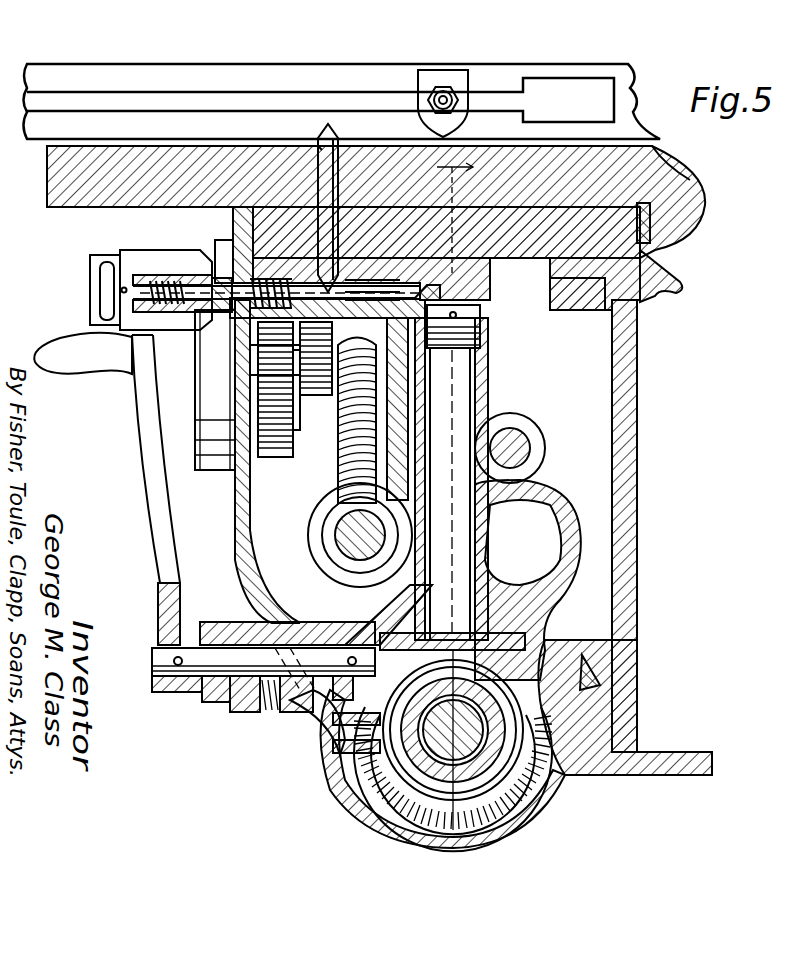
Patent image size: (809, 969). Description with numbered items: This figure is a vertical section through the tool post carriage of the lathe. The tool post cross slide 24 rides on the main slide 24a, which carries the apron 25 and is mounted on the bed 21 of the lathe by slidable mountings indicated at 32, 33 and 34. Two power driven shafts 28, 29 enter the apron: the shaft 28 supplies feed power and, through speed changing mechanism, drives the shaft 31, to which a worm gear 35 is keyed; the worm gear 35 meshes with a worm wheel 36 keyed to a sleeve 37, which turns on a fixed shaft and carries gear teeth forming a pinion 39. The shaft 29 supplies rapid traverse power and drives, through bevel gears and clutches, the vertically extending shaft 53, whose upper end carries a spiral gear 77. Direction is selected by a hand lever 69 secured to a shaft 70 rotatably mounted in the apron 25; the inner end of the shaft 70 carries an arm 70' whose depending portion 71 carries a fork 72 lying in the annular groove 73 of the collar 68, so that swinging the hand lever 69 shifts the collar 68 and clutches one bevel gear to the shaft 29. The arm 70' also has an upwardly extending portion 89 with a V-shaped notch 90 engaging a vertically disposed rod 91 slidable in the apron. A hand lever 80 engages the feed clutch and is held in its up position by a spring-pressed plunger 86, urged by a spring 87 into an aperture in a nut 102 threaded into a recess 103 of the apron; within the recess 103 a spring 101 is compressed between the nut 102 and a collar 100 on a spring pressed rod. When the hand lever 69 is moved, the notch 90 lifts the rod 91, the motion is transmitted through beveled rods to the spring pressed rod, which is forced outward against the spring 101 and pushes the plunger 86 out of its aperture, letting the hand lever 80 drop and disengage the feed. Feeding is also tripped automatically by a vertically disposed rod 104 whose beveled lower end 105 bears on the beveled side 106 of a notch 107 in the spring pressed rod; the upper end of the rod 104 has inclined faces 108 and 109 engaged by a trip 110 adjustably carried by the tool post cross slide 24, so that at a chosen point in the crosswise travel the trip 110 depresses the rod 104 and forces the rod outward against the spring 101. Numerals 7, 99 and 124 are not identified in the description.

The tool post cross slide 24 is at (640, 90).
The main slide 24a is at (702, 188).
The slidable mounting 34 is at (658, 164).
The slidable mounting 33 is at (665, 235).
The trip 110 is at (432, 122).
The inclined face 108 is at (327, 136).
The inclined face 109 is at (336, 136).
The vertically disposed rod 104 is at (318, 142).
The section line 7 is at (447, 214).
The bed 21 is at (642, 495).
The block 124 is at (607, 300).
The recess 103 is at (236, 212).
The nut 102 is at (233, 245).
The hand lever 80 is at (140, 262).
The spring 87 is at (172, 272).
The spring-pressed plunger 86 is at (220, 305).
The vertically disposed rod 91 is at (255, 342).
The spring 101 is at (225, 263).
The collar 100 is at (276, 272).
The sleeve 99 is at (271, 280).
The beveled lower end 105 is at (372, 251).
The beveled side 106 is at (372, 268).
The notch 107 is at (372, 272).
The apron 25 is at (235, 523).
The spiral gear 77 is at (484, 300).
The vertically extending shaft 53 is at (466, 370).
The pinion 39 is at (270, 452).
The sleeve 37 is at (316, 379).
The V-shaped notch 90 is at (290, 378).
The worm wheel 36 is at (345, 462).
The worm gear 35 is at (325, 543).
The shaft 31 is at (337, 560).
The power driven shaft 28 is at (540, 452).
The upwardly extending portion 89 is at (378, 598).
The arm 70' is at (418, 626).
The hand lever 69 is at (160, 509).
The shaft 70 is at (263, 690).
The depending portion 71 is at (315, 718).
The fork 72 is at (405, 782).
The annular groove 73 is at (562, 778).
The power driven shaft 29 is at (500, 820).
The collar 68 is at (520, 808).
The slidable mounting 32 is at (598, 680).